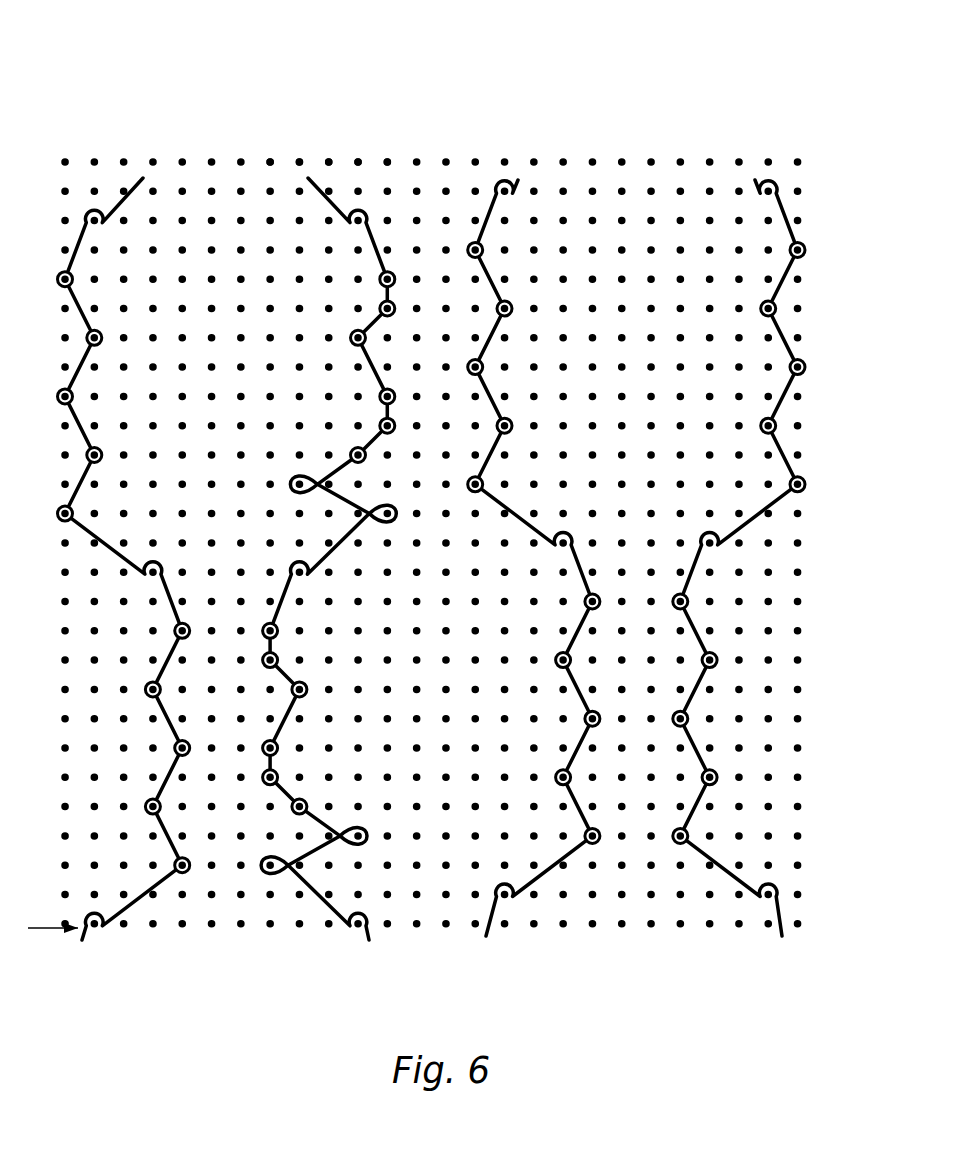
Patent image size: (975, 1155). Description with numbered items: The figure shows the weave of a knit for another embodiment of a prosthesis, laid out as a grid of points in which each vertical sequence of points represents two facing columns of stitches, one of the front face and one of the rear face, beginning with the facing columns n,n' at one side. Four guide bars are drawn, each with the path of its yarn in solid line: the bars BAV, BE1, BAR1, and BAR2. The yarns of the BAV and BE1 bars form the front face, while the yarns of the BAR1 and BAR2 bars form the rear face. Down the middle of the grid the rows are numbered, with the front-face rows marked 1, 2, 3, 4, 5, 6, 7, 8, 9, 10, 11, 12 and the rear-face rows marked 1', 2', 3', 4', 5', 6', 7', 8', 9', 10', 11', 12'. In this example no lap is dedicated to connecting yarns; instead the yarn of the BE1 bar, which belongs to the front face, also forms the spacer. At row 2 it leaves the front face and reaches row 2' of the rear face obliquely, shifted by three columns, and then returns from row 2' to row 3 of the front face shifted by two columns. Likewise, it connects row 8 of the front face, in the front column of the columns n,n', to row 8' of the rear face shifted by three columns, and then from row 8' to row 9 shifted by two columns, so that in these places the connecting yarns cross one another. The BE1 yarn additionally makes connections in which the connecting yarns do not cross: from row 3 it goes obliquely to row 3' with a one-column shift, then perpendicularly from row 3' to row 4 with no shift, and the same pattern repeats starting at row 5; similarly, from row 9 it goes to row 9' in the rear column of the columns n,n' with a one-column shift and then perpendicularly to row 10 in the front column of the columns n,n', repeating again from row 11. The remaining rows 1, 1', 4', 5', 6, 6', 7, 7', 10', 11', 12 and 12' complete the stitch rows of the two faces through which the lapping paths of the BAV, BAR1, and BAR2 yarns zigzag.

The BAV bar BAV is at (124, 580).
The BE1 bar BE1 is at (328, 580).
The BAR1 bar BAR1 is at (534, 581).
The BAR2 bar BAR2 is at (739, 581).
The columns n and n' n,n' is at (438, 135).
The row 1 of the front face 1 is at (431, 924).
The row 1' of the rear face 1' is at (431, 895).
The row 2 of the front face 2 is at (431, 866).
The row 2' of the rear face 2' is at (431, 836).
The row 3 of the front face 3 is at (431, 807).
The row 3' of the rear face 3' is at (431, 778).
The row 4 of the front face 4 is at (431, 749).
The row 4' of the rear face 4' is at (431, 719).
The row 5 of the front face 5 is at (431, 690).
The row 5' of the rear face 5' is at (431, 661).
The row 6 of the front face 6 is at (431, 631).
The row 6' of the rear face 6' is at (431, 602).
The row 7 of the front face 7 is at (431, 573).
The row 7' of the rear face 7' is at (431, 543).
The row 8 of the front face 8 is at (431, 514).
The row 8' of the rear face 8' is at (431, 485).
The row 9 of the front face 9 is at (431, 456).
The row 9' of the rear face 9' is at (431, 426).
The row 10 of the front face 10 is at (431, 397).
The row 10' of the rear face 10' is at (431, 368).
The row 11 of the front face 11 is at (431, 338).
The row 11' of the rear face 11' is at (431, 309).
The row 12 of the front face 12 is at (431, 280).
The row 12' of the rear face 12' is at (431, 250).